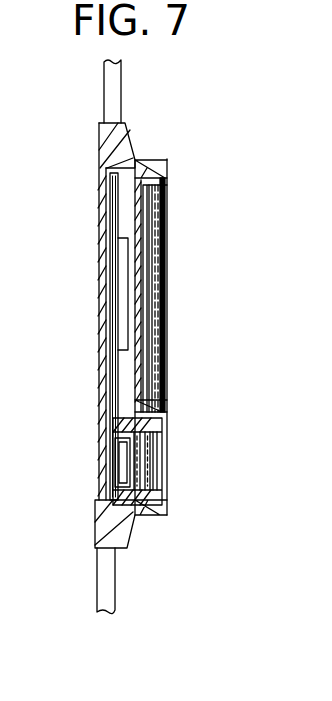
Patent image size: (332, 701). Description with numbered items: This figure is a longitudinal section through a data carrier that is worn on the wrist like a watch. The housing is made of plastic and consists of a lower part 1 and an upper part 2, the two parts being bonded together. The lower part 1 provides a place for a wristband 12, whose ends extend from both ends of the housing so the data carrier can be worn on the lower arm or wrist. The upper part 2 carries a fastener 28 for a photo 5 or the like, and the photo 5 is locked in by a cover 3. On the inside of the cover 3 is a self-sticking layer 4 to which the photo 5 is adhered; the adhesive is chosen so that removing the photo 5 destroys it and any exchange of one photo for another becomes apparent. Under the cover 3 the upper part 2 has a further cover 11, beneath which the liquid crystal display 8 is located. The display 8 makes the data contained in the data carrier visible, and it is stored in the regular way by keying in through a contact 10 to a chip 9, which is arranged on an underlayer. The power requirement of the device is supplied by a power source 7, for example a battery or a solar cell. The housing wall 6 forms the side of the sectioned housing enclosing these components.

The lower part 1 is at (122, 138).
The upper part 2 is at (167, 160).
The cover 3 is at (163, 285).
The self-sticking layer 4 is at (156, 252).
The photo 5 is at (150, 222).
The battery case 6 is at (106, 380).
The power source 7 is at (112, 318).
The liquid crystal display 8 is at (156, 447).
The chip 9 is at (120, 468).
The contact 10 is at (113, 436).
The cover 11 is at (153, 485).
The wristband 12 is at (118, 82).
The fastener 28 is at (163, 186).